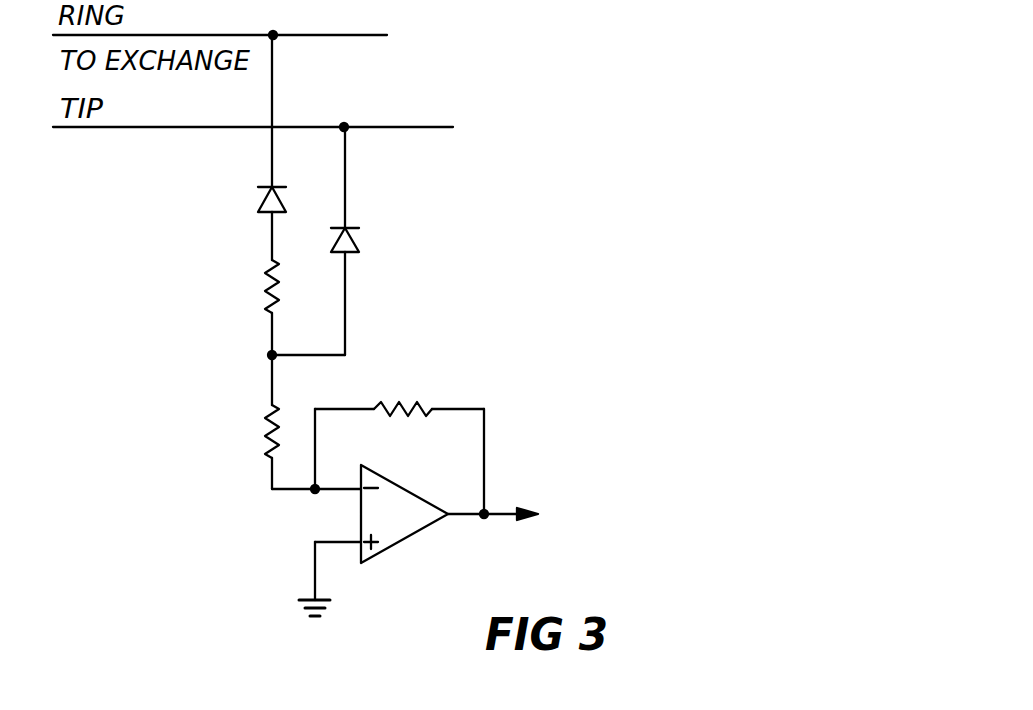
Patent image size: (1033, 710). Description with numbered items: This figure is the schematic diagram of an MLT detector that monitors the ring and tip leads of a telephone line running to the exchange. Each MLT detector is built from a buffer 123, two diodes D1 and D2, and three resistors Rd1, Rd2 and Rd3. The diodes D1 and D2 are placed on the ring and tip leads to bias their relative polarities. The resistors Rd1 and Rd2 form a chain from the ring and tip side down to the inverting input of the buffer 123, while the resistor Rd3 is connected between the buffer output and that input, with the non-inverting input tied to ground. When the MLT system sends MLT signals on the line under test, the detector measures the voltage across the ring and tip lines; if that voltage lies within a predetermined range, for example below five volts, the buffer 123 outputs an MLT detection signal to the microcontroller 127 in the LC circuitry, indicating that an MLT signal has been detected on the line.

The buffer 123 is at (410, 537).
The microcontroller 127 is at (684, 517).
The diode D1 is at (250, 200).
The diode D2 is at (368, 242).
The resistor Rd1 is at (221, 286).
The resistor Rd2 is at (233, 431).
The resistor Rd3 is at (397, 410).